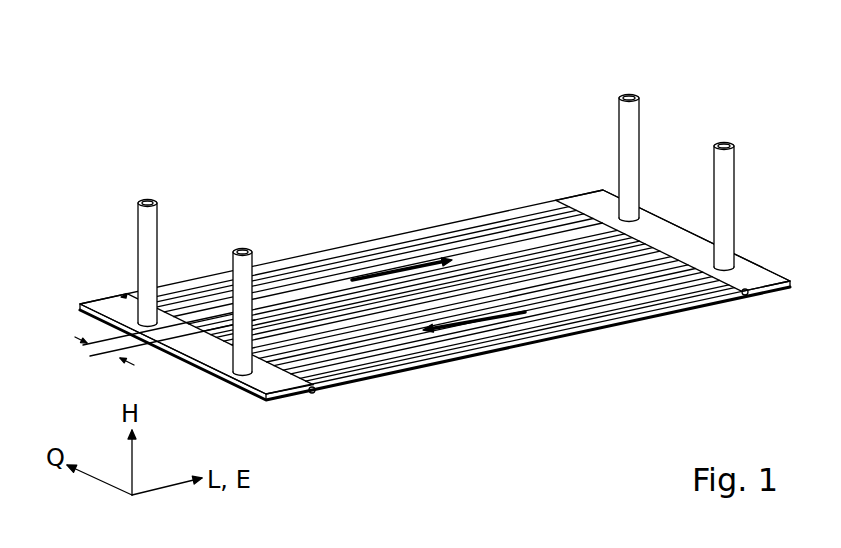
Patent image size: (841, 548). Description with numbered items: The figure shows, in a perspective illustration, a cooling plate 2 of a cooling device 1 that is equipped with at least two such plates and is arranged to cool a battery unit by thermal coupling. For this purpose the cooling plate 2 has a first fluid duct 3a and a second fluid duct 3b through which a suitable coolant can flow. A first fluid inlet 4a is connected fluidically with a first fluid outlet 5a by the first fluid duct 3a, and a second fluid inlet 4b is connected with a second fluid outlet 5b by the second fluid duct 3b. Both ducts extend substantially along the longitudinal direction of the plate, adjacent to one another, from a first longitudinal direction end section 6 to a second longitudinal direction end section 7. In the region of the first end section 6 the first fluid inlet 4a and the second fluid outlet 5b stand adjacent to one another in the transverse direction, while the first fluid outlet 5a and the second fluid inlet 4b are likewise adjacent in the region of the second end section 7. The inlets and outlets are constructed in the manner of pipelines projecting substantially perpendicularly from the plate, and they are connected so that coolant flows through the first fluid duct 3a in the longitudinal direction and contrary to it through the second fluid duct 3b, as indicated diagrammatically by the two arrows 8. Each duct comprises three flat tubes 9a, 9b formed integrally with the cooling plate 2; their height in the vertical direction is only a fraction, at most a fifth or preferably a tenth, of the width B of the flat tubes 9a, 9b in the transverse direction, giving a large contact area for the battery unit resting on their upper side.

The cooling device 1 is at (247, 102).
The cooling plate 2 is at (435, 340).
The first fluid duct 3a is at (437, 242).
The second fluid duct 3b is at (665, 277).
The first fluid inlet 4a is at (148, 200).
The second fluid inlet 4b is at (724, 143).
The first fluid outlet 5a is at (630, 95).
The second fluid outlet 5b is at (242, 249).
The first longitudinal direction end section 6 is at (110, 307).
The second longitudinal direction end section 7 is at (752, 277).
The arrows 8 is at (397, 268).
The flat tubes 9a is at (452, 240).
The flat tubes 9b is at (567, 322).
The width of the flat tubes B is at (100, 352).